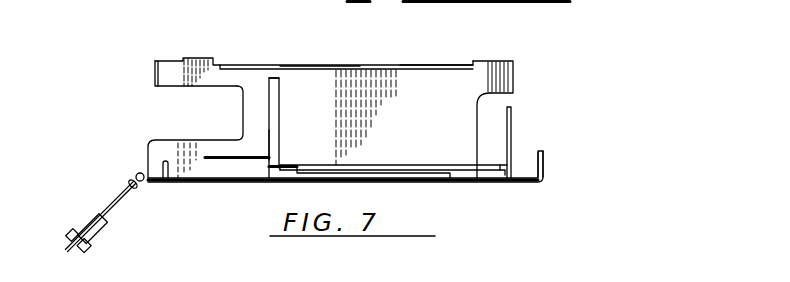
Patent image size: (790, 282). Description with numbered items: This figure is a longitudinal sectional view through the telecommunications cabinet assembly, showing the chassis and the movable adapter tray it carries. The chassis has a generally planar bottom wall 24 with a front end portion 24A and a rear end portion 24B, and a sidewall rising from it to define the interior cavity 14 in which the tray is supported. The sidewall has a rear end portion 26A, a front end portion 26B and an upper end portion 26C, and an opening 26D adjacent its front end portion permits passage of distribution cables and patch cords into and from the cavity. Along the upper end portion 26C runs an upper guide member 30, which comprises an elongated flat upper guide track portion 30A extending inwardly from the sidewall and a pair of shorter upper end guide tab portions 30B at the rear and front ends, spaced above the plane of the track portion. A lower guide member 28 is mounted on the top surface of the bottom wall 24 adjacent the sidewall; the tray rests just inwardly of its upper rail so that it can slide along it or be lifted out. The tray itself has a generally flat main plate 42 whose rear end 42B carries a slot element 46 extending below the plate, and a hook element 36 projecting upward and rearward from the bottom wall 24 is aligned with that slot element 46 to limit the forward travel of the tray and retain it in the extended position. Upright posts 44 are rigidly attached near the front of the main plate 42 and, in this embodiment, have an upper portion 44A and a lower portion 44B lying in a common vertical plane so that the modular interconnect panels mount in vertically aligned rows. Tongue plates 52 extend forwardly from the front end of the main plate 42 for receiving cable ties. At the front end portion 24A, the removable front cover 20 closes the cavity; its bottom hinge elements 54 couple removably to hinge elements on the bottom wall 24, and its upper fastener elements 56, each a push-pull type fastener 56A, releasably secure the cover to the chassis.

The interior cavity 14 is at (481, 183).
The front cover 20 is at (118, 203).
The bottom wall 24 is at (498, 183).
The front end portion of bottom wall 24A is at (188, 180).
The rear end portion of bottom wall 24B is at (505, 185).
The rear end portion of sidewall 26A is at (515, 82).
The front end portion of sidewall 26B is at (155, 71).
The upper end portion of sidewall 26C is at (312, 65).
The opening in sidewall 26D is at (175, 102).
The lower guide member 28 is at (433, 176).
The upper guide member 30 is at (395, 65).
The upper guide track portion 30A is at (420, 65).
The upper end guide tab portion 30B is at (200, 58).
The hook element 36 is at (283, 168).
The main plate 42 is at (372, 165).
The rear end of main plate 42B is at (497, 170).
The upright post 44 is at (278, 107).
The upper portion of upright post 44A is at (270, 78).
The lower portion of upright post 44B is at (272, 145).
The slot element 46 is at (508, 168).
The tongue plate 52 is at (236, 162).
The bottom hinge element 54 is at (137, 174).
The upper fastener element 56 is at (95, 237).
The push-pull type fastener 56A is at (90, 247).